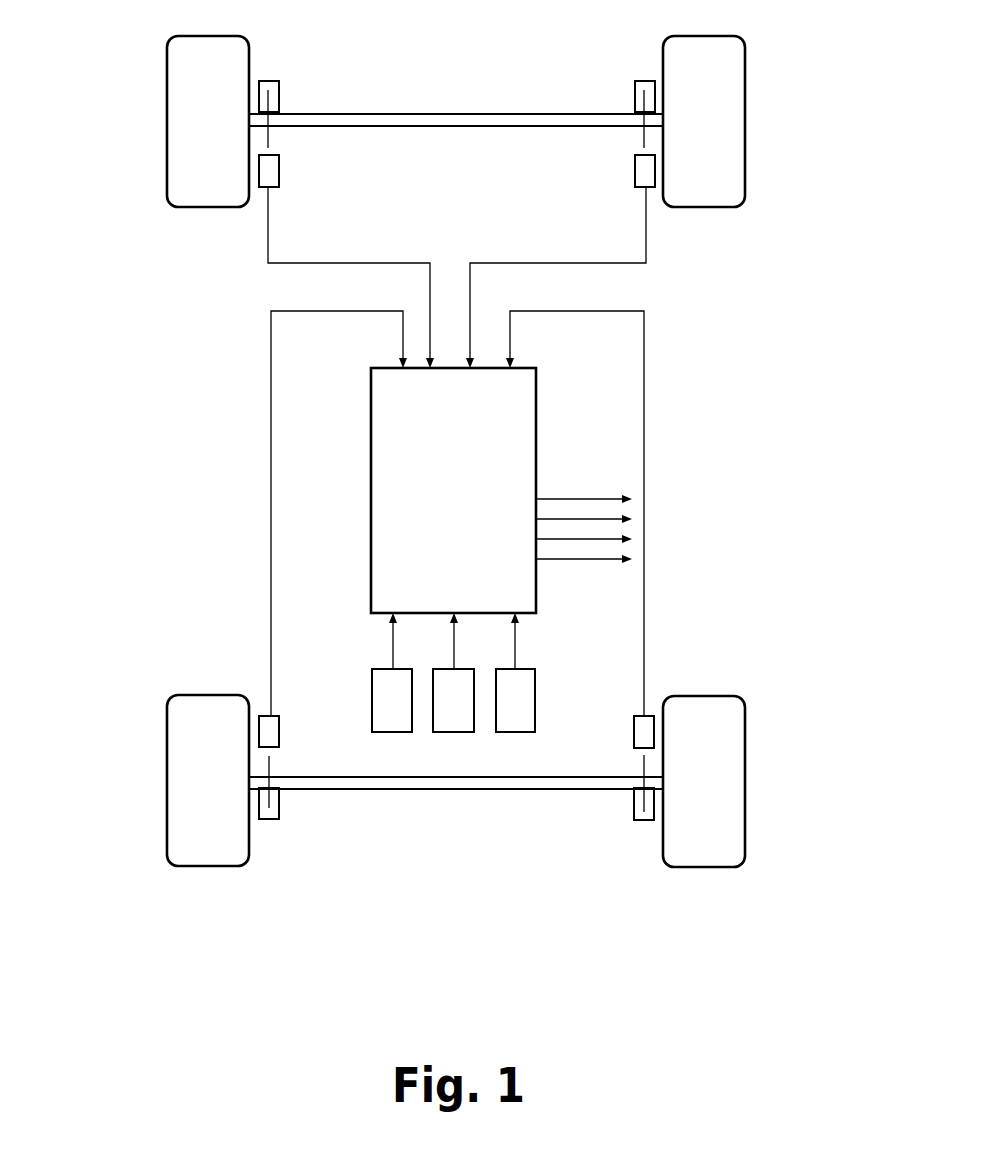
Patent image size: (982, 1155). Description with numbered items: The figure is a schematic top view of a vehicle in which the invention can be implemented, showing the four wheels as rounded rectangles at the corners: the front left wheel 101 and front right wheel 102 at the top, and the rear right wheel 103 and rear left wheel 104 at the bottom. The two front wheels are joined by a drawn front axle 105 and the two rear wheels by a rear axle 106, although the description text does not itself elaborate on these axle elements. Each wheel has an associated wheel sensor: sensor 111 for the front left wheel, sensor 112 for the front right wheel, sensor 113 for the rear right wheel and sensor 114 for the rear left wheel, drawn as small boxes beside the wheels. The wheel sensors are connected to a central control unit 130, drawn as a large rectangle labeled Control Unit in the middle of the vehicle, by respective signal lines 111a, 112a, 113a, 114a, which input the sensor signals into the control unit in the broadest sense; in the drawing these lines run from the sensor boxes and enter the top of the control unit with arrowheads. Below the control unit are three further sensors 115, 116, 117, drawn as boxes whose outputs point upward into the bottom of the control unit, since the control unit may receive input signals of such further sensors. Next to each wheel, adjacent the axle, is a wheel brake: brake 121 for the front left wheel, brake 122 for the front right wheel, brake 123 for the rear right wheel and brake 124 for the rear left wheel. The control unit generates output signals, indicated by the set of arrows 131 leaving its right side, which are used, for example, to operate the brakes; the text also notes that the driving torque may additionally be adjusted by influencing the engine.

The front left wheel 101 is at (183, 73).
The front right wheel 102 is at (727, 110).
The rear right wheel 103 is at (727, 787).
The rear left wheel 104 is at (187, 779).
The front axle 105 is at (448, 113).
The rear axle 106 is at (438, 790).
The wheel sensor 111 is at (280, 170).
The wheel sensor 112 is at (634, 173).
The wheel sensor 113 is at (613, 690).
The wheel sensor 114 is at (305, 691).
The signal line 111a is at (268, 239).
The signal line 112a is at (646, 247).
The signal line 113a is at (645, 460).
The signal line 114a is at (270, 459).
The further sensor 115 is at (393, 715).
The further sensor 116 is at (457, 718).
The further sensor 117 is at (516, 712).
The wheel brake 121 is at (280, 85).
The wheel brake 122 is at (634, 91).
The wheel brake 123 is at (643, 822).
The wheel brake 124 is at (275, 820).
The control unit 130 is at (379, 458).
The output signals of control unit 131 is at (559, 479).